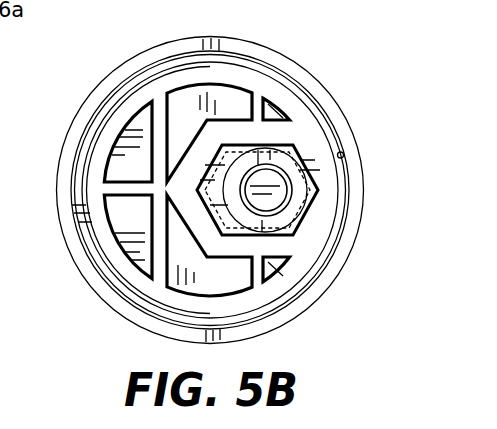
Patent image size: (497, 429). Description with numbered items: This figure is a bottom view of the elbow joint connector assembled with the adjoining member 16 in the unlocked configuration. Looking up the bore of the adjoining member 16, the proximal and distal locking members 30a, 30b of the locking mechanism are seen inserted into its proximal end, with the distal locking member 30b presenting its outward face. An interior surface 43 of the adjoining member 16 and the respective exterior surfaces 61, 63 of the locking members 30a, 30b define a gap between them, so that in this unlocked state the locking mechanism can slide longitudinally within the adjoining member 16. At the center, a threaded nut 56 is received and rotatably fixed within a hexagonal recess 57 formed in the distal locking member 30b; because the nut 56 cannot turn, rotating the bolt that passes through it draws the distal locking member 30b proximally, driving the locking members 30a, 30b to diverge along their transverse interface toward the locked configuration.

The adjoining member 16 is at (358, 212).
The exterior surface of distal locking member 63 is at (83, 140).
The exterior surface of proximal locking member 61 is at (338, 200).
The interior surface of adjoining member 43 is at (343, 153).
The proximal locking member 30a is at (77, 207).
The distal locking member 30b is at (312, 233).
The hexagonal recess 57 is at (228, 143).
The nut 56 is at (288, 167).